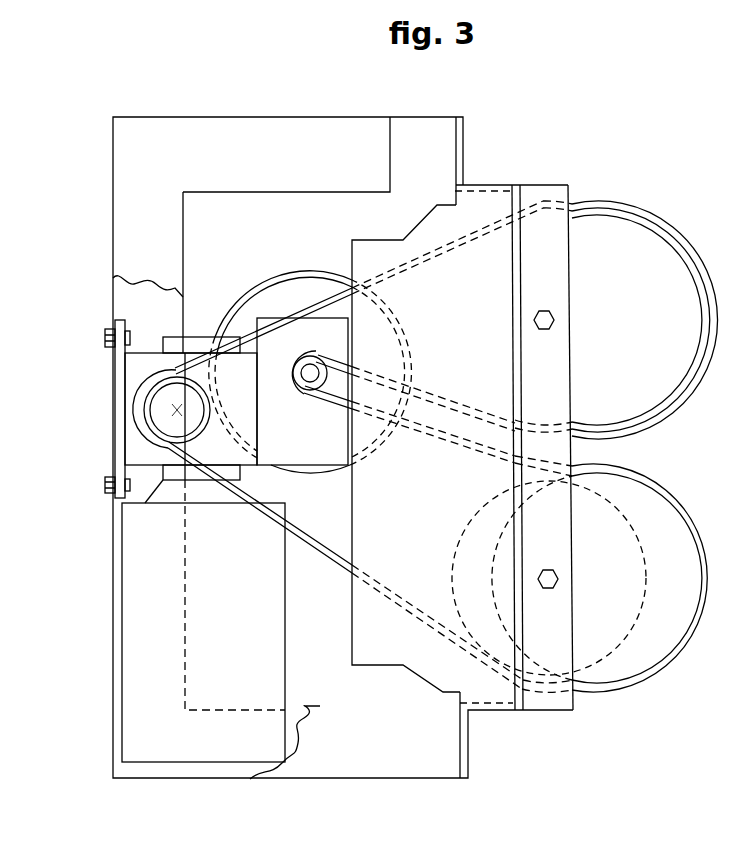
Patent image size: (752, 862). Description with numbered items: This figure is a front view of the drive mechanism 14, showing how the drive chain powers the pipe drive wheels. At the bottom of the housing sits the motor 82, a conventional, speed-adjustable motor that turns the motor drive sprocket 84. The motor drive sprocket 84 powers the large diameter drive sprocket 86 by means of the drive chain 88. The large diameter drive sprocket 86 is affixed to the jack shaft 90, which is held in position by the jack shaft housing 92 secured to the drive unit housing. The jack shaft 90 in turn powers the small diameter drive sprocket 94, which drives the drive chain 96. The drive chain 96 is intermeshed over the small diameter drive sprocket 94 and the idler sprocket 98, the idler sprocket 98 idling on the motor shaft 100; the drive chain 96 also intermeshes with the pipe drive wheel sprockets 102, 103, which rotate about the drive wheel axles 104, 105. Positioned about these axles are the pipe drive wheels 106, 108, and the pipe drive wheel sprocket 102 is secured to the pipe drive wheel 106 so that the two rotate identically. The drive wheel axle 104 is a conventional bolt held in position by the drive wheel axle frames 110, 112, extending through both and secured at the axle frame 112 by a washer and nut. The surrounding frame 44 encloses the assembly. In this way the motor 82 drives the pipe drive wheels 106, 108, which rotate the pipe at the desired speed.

The drive mechanism 14 is at (330, 502).
The frame housing 44 is at (437, 785).
The motor 82 is at (238, 611).
The motor drive sprocket 84 is at (180, 423).
The large diameter drive sprocket 86 is at (293, 287).
The drive chain 88 is at (215, 322).
The jack shaft 90 is at (292, 360).
The jack shaft housing 92 is at (285, 425).
The small diameter drive sprocket 94 is at (342, 370).
The drive chain 96 is at (318, 543).
The idler sprocket 98 is at (165, 415).
The motor shaft 100 is at (177, 410).
The pipe drive wheel sprocket 102 is at (608, 520).
The pipe drive wheel sprocket 103 is at (598, 268).
The drive wheel axle 104 is at (538, 580).
The drive wheel axle 105 is at (538, 318).
The pipe drive wheel 106 is at (657, 620).
The pipe drive wheel 108 is at (663, 343).
The drive wheel axle frame 110 is at (557, 712).
The drive wheel axle frame 112 is at (530, 712).